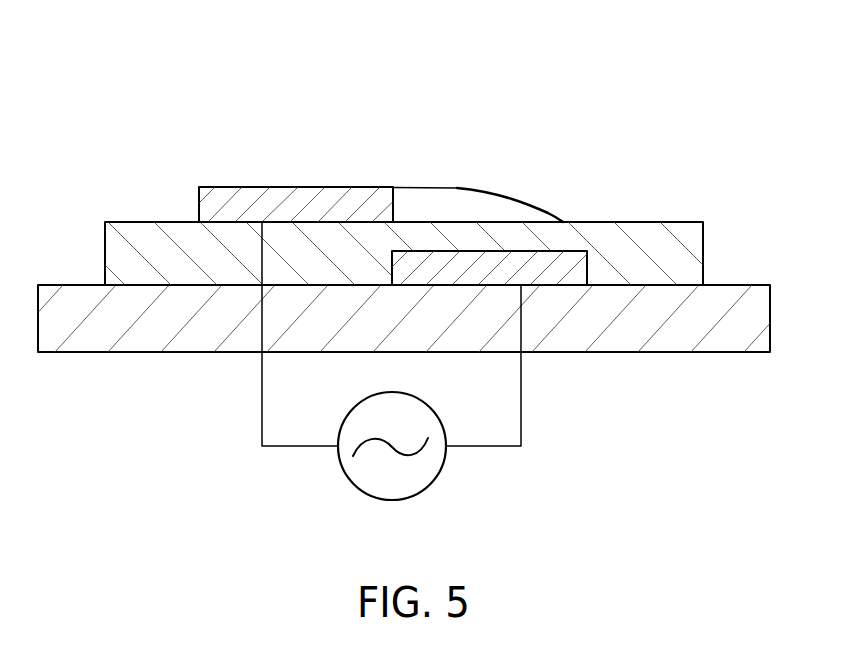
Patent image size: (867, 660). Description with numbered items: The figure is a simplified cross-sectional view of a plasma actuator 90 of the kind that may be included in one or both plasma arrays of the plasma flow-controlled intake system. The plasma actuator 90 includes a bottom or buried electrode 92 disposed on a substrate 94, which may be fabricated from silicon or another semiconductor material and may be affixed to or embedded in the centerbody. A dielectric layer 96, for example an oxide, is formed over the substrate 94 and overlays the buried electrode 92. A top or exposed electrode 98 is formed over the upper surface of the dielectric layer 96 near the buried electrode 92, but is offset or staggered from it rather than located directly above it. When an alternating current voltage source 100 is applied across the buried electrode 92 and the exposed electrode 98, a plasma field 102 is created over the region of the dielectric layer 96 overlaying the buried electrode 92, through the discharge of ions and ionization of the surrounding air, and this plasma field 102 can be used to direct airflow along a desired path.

The plasma actuator 90 is at (138, 157).
The buried electrode 92 is at (561, 260).
The substrate 94 is at (568, 327).
The dielectric layer 96 is at (667, 230).
The exposed electrode 98 is at (302, 200).
The alternating current voltage source 100 is at (432, 482).
The plasma field 102 is at (440, 188).